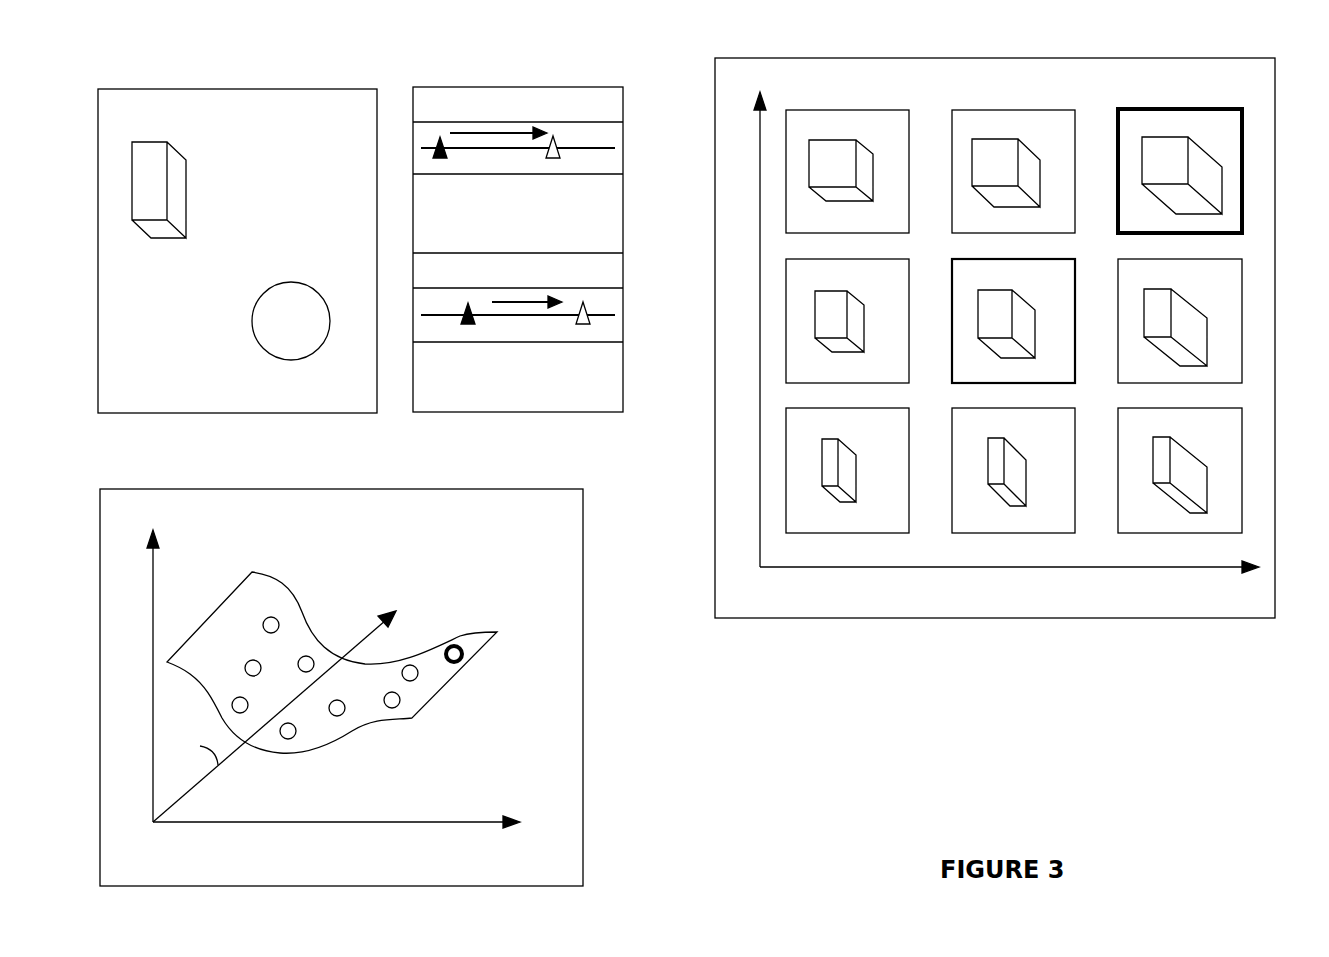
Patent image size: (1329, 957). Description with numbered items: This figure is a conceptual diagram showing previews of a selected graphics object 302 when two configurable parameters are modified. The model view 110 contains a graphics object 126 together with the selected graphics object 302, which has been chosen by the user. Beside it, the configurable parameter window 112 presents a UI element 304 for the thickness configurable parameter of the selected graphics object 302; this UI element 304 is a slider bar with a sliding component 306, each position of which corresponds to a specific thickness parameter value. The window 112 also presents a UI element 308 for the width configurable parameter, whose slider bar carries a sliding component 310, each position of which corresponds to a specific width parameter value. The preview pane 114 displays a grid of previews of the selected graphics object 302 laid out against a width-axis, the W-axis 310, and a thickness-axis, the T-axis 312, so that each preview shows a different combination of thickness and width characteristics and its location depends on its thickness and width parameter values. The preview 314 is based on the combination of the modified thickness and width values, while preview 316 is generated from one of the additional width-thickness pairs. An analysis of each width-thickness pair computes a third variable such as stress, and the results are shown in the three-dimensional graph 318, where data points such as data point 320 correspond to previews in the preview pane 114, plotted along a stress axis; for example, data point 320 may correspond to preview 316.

The model view 110 is at (200, 89).
The selected graphics object 302 is at (181, 155).
The graphics object 126 is at (290, 281).
The configurable parameter window 112 is at (517, 87).
The UI element 304 is at (623, 138).
The sliding component 306 is at (552, 160).
The UI element 308 is at (623, 307).
The sliding component / width-axis (W-axis) 310 is at (583, 326).
The preview pane 114 is at (717, 497).
The thickness-axis (T-axis) 312 is at (1132, 570).
The preview 314 is at (1068, 286).
The preview 316 is at (1234, 136).
The 3D graph 318 is at (583, 572).
The data point 320 is at (457, 663).